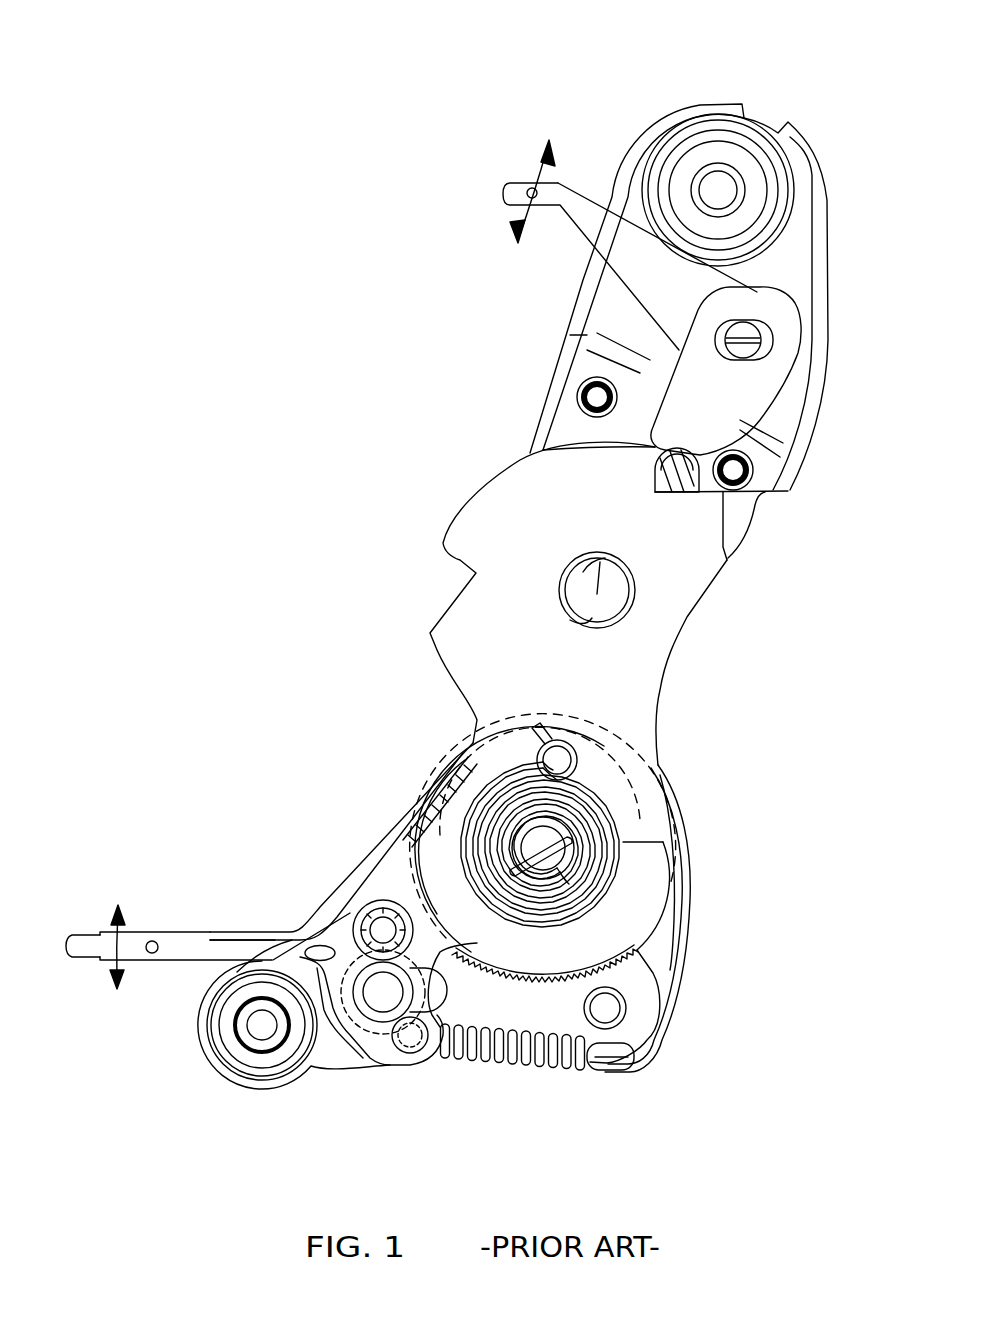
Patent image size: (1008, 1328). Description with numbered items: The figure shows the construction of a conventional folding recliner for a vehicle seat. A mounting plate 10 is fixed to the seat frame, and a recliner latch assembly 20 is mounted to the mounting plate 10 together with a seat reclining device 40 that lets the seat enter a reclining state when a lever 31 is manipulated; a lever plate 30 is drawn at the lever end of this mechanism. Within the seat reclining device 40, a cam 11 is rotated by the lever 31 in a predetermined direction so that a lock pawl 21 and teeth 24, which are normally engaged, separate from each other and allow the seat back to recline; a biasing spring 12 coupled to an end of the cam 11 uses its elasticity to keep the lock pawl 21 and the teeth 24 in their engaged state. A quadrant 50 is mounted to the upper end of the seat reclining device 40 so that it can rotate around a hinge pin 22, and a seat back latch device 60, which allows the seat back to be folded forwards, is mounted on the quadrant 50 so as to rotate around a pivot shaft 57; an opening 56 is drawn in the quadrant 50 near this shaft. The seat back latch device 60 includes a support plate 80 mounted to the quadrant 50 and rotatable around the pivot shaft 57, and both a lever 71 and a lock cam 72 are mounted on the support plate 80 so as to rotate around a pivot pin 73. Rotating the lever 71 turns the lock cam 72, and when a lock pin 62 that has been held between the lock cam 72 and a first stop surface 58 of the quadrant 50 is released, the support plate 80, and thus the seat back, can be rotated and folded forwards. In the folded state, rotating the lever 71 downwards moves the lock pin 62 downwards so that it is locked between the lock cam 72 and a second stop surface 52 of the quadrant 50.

The mounting plate 10 is at (325, 1052).
The cam 11 is at (390, 1060).
The biasing spring 12 is at (493, 1063).
The recliner latch assembly 20 is at (655, 977).
The lock pawl 21 is at (553, 1020).
The hinge pin 22 is at (567, 882).
The teeth 24 is at (643, 947).
The lever plate 30 is at (273, 922).
The lever 31 is at (182, 947).
The seat reclining device 40 is at (388, 805).
The quadrant 50 is at (680, 620).
The second stop surface 52 is at (458, 561).
The hole 56 is at (582, 620).
The pivot shaft 57 is at (610, 558).
The first stop surface 58 is at (729, 562).
The seat back latch device 60 is at (515, 368).
The lock pin 62 is at (694, 495).
The lever 71 is at (683, 295).
The lock cam 72 is at (730, 410).
The pivot pin 73 is at (747, 322).
The support plate 80 is at (708, 100).